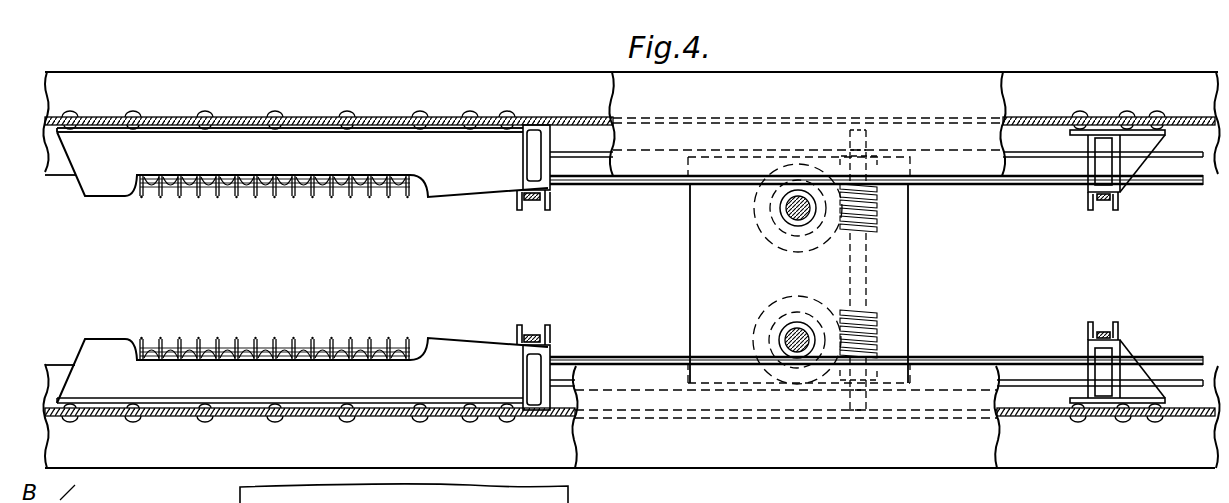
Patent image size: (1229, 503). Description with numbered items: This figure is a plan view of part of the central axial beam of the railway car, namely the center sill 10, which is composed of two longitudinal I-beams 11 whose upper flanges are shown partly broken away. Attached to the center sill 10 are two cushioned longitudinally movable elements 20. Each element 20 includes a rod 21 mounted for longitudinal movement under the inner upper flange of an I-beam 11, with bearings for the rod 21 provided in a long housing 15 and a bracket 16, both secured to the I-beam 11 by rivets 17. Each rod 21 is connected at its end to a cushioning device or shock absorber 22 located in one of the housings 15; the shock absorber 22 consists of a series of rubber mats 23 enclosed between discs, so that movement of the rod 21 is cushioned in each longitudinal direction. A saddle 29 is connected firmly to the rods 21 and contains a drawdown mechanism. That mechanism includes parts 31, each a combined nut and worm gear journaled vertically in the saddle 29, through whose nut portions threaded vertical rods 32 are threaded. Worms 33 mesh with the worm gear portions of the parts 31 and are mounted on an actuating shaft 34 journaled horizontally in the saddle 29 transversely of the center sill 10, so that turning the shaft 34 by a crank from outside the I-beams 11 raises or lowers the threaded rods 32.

The center sill 10 is at (1096, 79).
The I-beams 11 is at (713, 104).
The housings 15 is at (301, 161).
The brackets 16 is at (1125, 164).
The rivets 17 is at (206, 116).
The cushioned longitudinally movable elements 20 is at (275, 267).
The rods 21 is at (593, 185).
The cushioning device or shock absorber 22 is at (292, 198).
The rubber mats 23 is at (209, 198).
The saddle 29 is at (681, 287).
The combined nut and worm gear parts 31 is at (776, 235).
The threaded vertical rods 32 is at (790, 209).
The worms 33 is at (880, 218).
The actuating shaft 34 is at (866, 283).